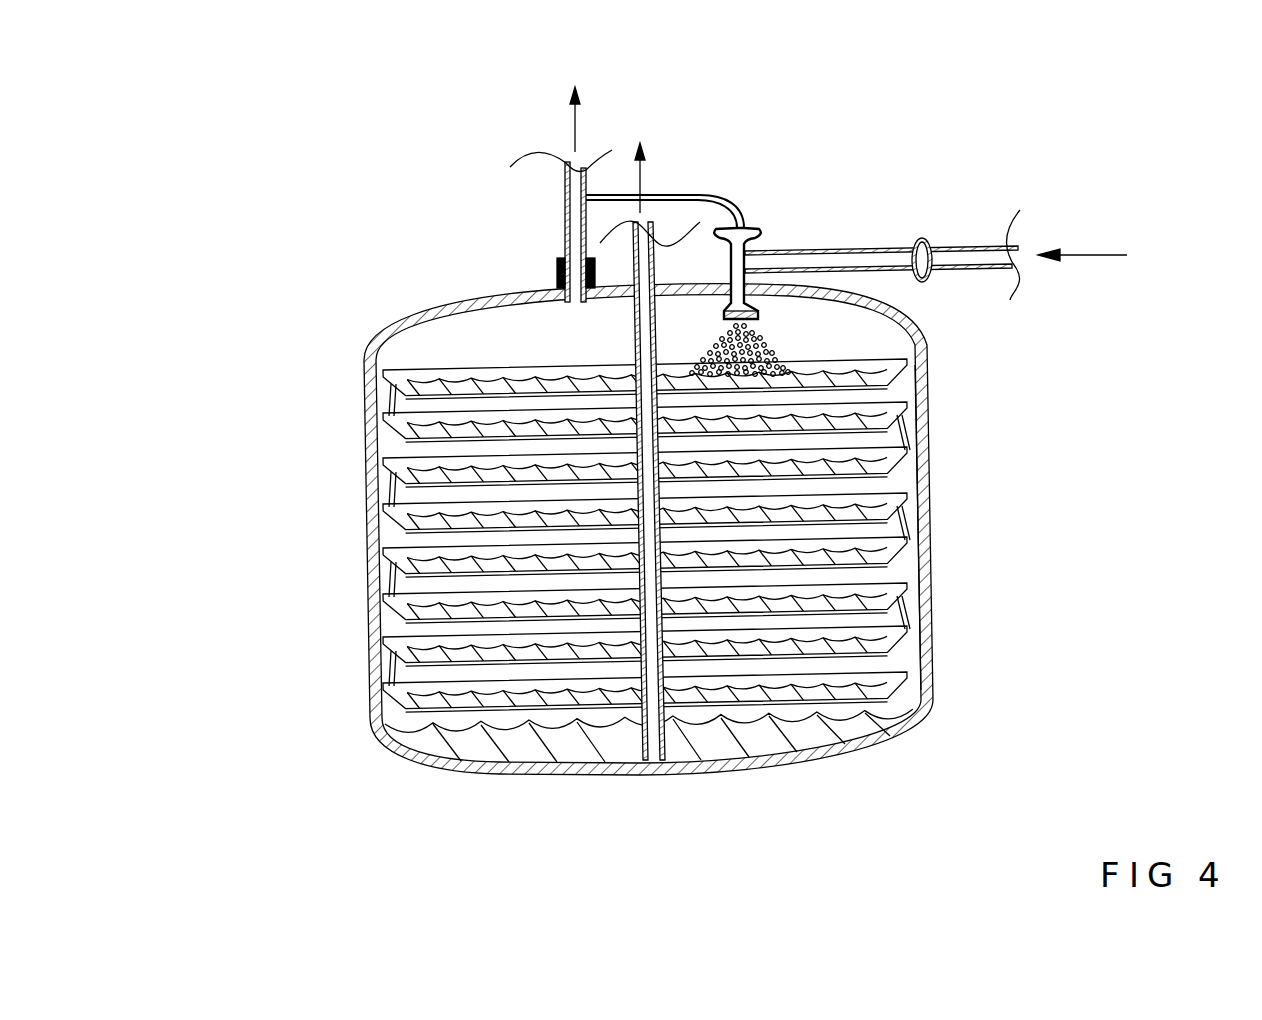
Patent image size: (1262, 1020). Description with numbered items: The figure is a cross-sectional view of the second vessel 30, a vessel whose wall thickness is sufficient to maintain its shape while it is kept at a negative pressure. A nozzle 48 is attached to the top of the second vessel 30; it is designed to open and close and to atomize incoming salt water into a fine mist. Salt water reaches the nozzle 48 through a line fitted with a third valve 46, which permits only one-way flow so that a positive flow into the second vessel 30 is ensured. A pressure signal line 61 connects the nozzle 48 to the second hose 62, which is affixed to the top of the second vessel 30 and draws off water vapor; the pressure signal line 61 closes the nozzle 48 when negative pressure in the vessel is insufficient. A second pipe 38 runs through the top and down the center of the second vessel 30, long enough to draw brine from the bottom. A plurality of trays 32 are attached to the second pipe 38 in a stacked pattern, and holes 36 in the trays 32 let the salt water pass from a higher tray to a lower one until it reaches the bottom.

The second vessel 30 is at (933, 643).
The trays 32 is at (913, 482).
The holes 36 is at (392, 400).
The second pipe 38 is at (653, 283).
The third valve 46 is at (923, 236).
The nozzle 48 is at (740, 226).
The pressure signal line 61 is at (669, 195).
The second hose 62 is at (565, 203).